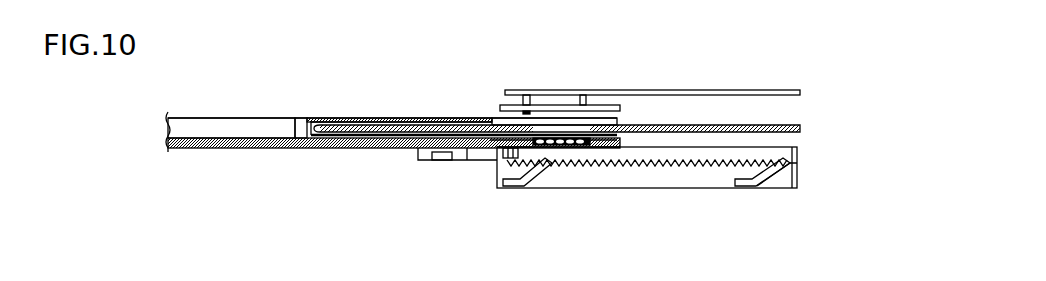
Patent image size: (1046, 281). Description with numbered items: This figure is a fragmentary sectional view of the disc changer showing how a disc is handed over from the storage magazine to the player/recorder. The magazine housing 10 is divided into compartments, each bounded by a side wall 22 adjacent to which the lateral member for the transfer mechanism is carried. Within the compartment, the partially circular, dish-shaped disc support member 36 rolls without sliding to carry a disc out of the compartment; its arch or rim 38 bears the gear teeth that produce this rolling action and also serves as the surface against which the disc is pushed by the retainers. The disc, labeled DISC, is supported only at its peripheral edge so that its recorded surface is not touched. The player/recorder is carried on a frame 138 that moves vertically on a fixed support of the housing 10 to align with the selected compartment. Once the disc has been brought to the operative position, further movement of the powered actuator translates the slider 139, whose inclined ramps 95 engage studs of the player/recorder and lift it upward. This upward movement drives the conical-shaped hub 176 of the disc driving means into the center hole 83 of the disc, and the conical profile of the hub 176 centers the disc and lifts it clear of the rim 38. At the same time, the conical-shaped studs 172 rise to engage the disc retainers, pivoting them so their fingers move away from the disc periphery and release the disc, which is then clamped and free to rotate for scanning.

The housing 10 is at (219, 116).
The side wall 22 is at (254, 130).
The arch or rim 38 is at (316, 122).
The disc support member 36 is at (318, 148).
The center hole 83 is at (573, 127).
The disc DISC is at (689, 123).
The frame 138 is at (797, 147).
The conical-shaped studs 172 is at (497, 168).
The hub 176 is at (538, 162).
The inclined ramps 95 is at (547, 173).
The slider 139 is at (783, 183).